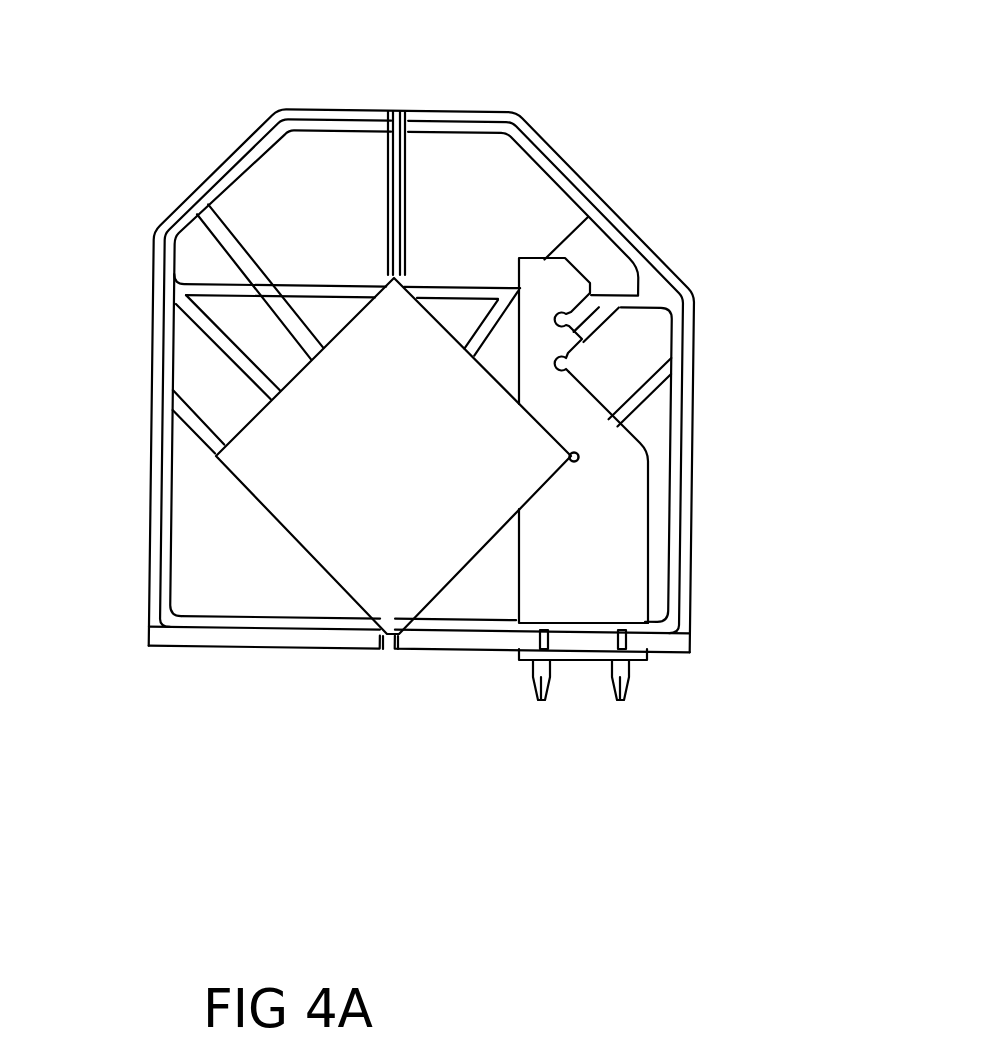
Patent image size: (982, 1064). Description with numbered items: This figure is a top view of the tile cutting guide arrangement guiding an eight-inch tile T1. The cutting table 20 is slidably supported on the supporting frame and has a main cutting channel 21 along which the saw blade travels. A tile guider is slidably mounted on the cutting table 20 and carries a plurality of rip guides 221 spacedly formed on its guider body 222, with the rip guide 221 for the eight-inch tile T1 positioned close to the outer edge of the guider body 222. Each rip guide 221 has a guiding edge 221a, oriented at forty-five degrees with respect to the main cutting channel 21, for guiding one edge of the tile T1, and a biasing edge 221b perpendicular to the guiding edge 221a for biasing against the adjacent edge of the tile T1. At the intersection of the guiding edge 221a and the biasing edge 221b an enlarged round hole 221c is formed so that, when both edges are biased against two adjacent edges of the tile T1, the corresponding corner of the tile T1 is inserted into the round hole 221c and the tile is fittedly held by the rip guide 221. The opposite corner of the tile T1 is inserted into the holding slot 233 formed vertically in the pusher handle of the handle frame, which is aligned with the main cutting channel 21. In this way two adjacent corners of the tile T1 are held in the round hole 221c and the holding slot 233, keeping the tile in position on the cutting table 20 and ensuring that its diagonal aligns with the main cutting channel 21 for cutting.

The cutting table 20 is at (552, 154).
The main cutting channel 21 is at (398, 98).
The 8-inch tile T1 is at (262, 430).
The rip guide 221 is at (848, 386).
The guiding edge 221a is at (537, 493).
The biasing edge 221b is at (548, 423).
The round hole 221c is at (586, 449).
The guider body 222 is at (607, 607).
The holding slot 233 is at (387, 662).